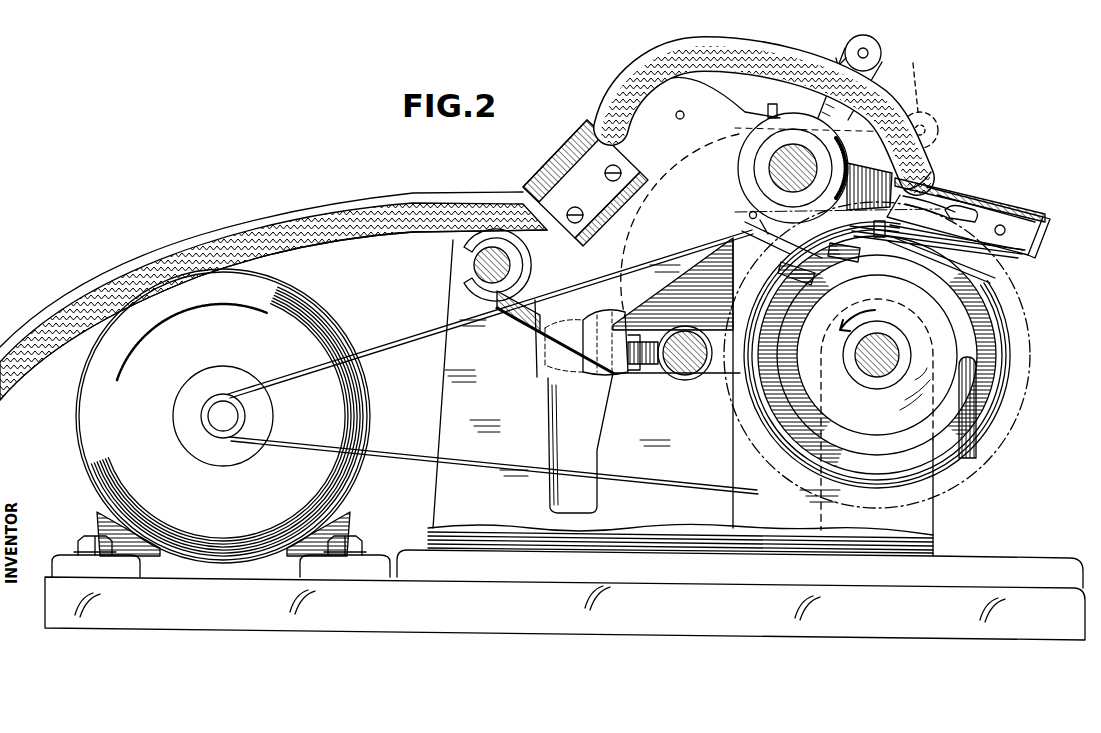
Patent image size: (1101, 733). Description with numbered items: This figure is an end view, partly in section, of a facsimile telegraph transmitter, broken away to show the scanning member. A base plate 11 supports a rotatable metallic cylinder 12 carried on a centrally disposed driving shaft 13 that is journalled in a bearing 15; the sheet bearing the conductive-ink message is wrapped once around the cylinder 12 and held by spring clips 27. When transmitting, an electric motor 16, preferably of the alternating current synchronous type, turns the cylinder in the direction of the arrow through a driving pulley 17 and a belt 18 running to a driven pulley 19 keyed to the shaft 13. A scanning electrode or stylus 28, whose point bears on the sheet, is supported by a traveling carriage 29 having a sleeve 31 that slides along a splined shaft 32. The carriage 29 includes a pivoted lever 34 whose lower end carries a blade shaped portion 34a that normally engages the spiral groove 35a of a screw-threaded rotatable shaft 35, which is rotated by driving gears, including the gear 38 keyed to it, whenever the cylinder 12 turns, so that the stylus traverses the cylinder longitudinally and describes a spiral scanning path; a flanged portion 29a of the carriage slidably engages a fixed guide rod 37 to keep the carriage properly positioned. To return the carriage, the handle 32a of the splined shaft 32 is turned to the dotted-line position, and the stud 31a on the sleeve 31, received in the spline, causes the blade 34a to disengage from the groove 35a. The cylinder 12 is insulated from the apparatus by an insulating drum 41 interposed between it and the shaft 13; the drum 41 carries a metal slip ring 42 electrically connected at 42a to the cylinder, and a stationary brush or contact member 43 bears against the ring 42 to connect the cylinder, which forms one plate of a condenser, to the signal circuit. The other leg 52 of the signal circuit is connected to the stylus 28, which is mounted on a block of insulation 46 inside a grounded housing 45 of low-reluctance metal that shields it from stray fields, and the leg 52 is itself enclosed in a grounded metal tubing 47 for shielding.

The base plate 11 is at (408, 622).
The rotatable metallic cylinder 12 is at (993, 318).
The driving shaft 13 is at (865, 362).
The bearing 15 is at (920, 515).
The electric motor 16 is at (98, 419).
The driving pulley 17 is at (205, 418).
The belt 18 is at (415, 458).
The driven pulley 19 is at (978, 476).
The spring clips 27 is at (990, 281).
The scanning electrode or stylus 28 is at (967, 200).
The traveling carriage 29 is at (685, 97).
The flanged portion of the carriage 29a is at (478, 288).
The sleeve 31 is at (767, 152).
The stud 31a is at (775, 160).
The splined shaft 32 is at (793, 147).
The handle 32a is at (881, 54).
The pivoted lever 34 is at (617, 343).
The blade shaped portion 34a is at (645, 368).
The rotatable screw-threaded shaft 35 is at (683, 370).
The spiral groove 35a is at (688, 328).
The fixed guide rod 37 is at (475, 265).
The driving gear 38 is at (770, 110).
The insulating drum 41 is at (987, 340).
The metal slip ring 42 is at (967, 350).
The electrical connection 42a is at (749, 215).
The stationary brush or contact member 43 is at (980, 432).
The grounded housing 45 is at (1010, 208).
The block of insulation 46 is at (1025, 240).
The grounded metal covering or tubing 47 is at (396, 183).
The leg of the signal circuit 52 is at (938, 203).